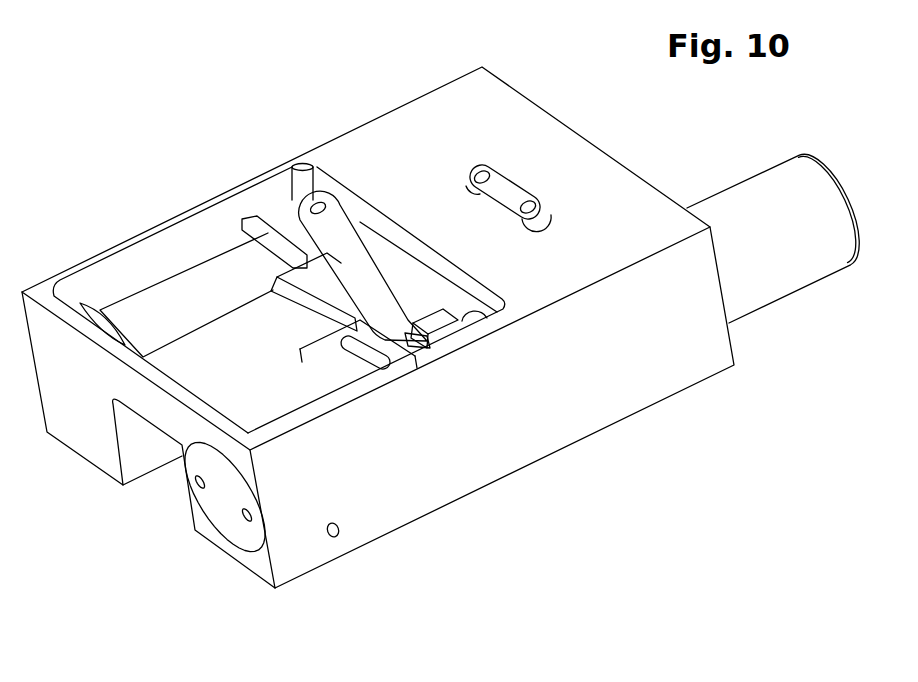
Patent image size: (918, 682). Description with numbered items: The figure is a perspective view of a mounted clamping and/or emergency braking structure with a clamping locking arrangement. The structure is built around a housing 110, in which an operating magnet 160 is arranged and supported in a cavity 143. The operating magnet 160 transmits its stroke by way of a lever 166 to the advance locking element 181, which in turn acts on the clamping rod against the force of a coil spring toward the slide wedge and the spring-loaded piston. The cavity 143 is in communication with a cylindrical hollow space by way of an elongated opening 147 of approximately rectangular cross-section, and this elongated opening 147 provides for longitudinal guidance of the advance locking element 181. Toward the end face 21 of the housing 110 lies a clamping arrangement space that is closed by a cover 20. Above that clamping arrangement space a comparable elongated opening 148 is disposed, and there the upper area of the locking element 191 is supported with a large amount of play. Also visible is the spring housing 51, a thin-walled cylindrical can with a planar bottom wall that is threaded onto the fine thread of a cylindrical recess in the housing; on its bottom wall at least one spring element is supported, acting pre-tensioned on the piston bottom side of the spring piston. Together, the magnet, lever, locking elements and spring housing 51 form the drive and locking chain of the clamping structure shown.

The housing 110 is at (145, 479).
The operating magnet 160 is at (159, 316).
The cover 20 is at (227, 515).
The end face 21 is at (201, 528).
The elongated opening 148 is at (347, 343).
The locking element 191 is at (365, 360).
The lever 166 is at (400, 330).
The advance locking element 181 is at (438, 325).
The elongated opening 147 is at (473, 313).
The cavity 143 is at (506, 312).
The spring housing 51 is at (758, 268).